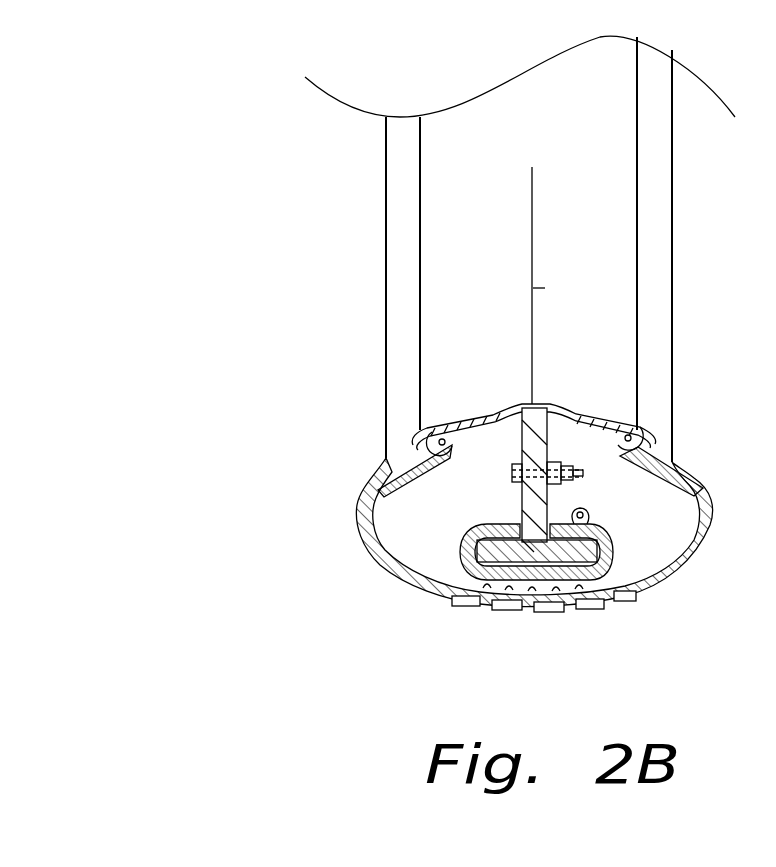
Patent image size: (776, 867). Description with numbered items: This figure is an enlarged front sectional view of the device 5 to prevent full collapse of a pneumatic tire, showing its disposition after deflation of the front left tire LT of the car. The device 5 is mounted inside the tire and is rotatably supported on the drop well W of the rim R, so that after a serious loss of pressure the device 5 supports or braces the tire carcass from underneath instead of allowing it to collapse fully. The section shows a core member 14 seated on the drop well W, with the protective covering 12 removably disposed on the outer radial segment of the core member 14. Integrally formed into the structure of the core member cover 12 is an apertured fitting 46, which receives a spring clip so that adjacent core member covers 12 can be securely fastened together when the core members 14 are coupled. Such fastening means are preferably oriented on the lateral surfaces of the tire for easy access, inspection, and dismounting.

The front left tire LT is at (352, 271).
The rim R is at (604, 256).
The drop well W is at (537, 376).
The device 5 is at (497, 457).
The core member 14 is at (548, 447).
The protective covering 12 is at (452, 550).
The apertured fitting 46 is at (601, 511).